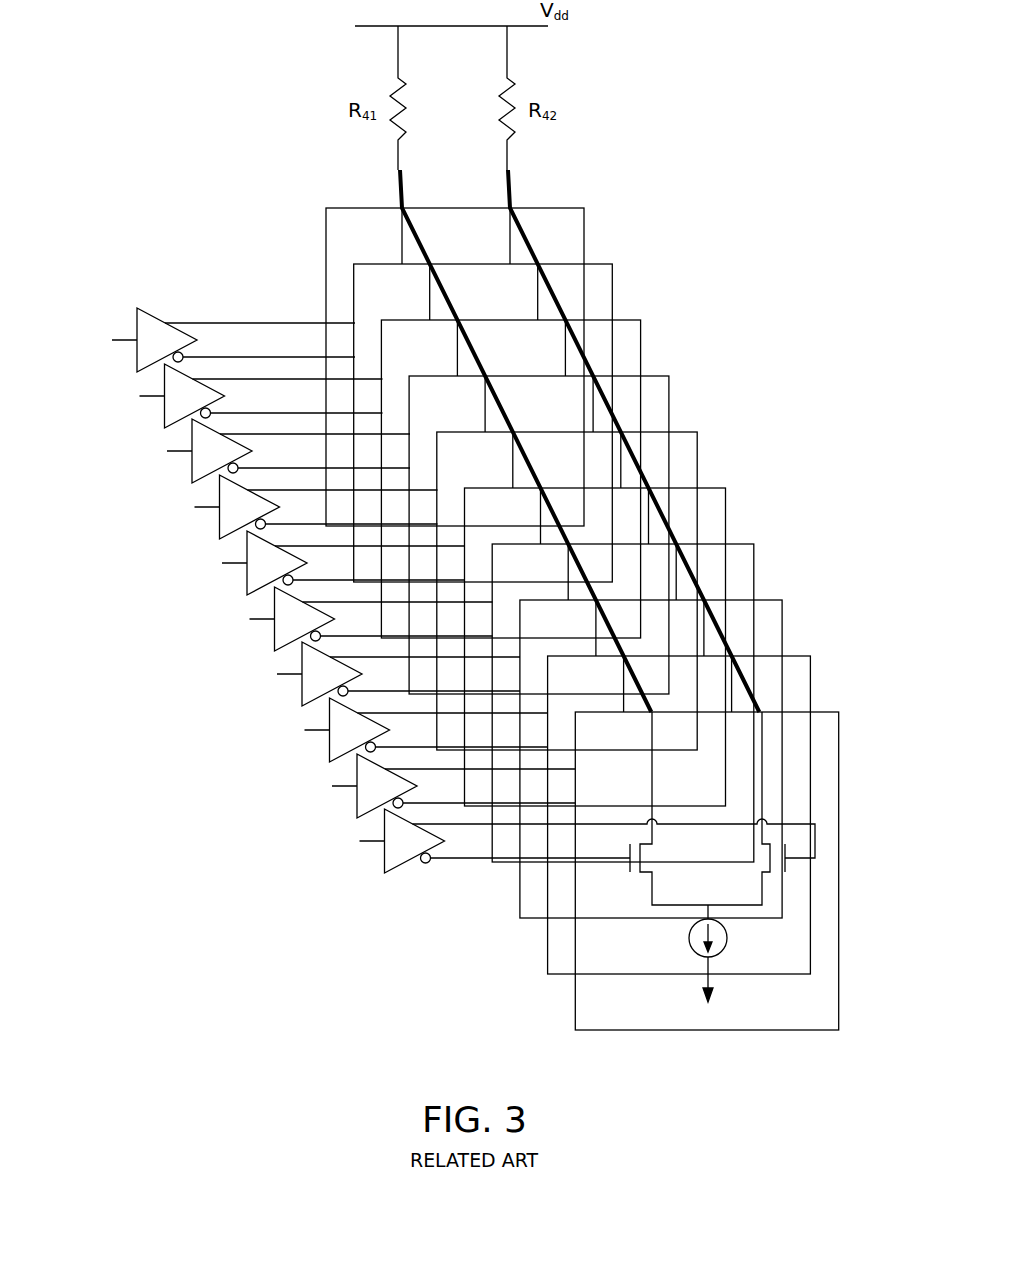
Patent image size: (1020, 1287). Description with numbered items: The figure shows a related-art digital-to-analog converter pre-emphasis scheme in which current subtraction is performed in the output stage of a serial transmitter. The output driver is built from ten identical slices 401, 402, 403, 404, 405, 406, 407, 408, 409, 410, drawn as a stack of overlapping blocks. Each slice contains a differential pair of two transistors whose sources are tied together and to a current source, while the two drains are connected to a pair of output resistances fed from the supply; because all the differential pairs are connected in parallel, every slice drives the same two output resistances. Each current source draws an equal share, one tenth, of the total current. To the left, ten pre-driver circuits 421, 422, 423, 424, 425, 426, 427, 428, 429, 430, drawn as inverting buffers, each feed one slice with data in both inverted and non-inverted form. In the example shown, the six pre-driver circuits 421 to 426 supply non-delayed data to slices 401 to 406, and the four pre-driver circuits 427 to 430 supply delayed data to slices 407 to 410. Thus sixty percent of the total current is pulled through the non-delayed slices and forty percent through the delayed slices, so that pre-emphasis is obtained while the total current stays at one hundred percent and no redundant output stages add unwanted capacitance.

The slice 401 is at (839, 765).
The slice 402 is at (810, 687).
The slice 403 is at (782, 622).
The slice 404 is at (754, 560).
The slice 405 is at (726, 507).
The slice 406 is at (697, 451).
The slice 407 is at (669, 393).
The slice 408 is at (641, 337).
The slice 409 is at (612, 285).
The slice 410 is at (584, 228).
The pre-driver circuit 421 is at (391, 866).
The pre-driver circuit 422 is at (364, 811).
The pre-driver circuit 423 is at (336, 755).
The pre-driver circuit 424 is at (309, 699).
The pre-driver circuit 425 is at (281, 644).
The pre-driver circuit 426 is at (254, 588).
The pre-driver circuit 427 is at (228, 530).
The pre-driver circuit 428 is at (208, 470).
The pre-driver circuit 429 is at (180, 387).
The pre-driver circuit 430 is at (152, 323).